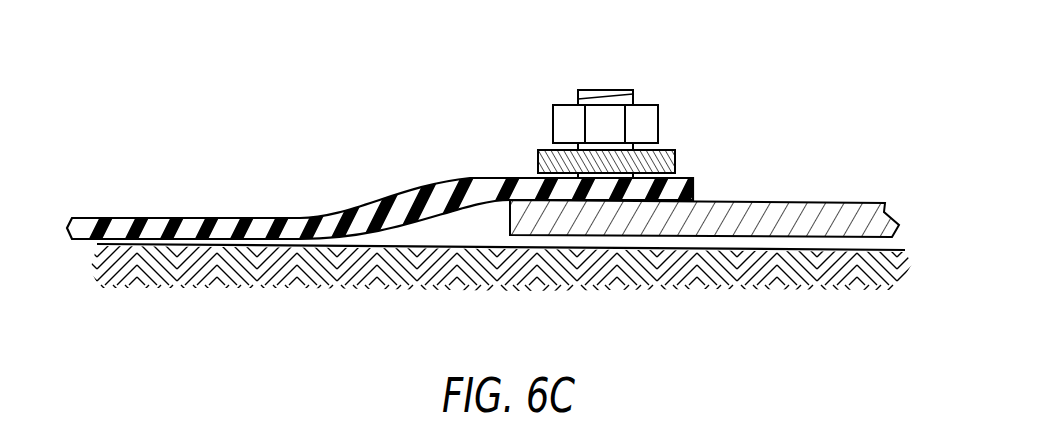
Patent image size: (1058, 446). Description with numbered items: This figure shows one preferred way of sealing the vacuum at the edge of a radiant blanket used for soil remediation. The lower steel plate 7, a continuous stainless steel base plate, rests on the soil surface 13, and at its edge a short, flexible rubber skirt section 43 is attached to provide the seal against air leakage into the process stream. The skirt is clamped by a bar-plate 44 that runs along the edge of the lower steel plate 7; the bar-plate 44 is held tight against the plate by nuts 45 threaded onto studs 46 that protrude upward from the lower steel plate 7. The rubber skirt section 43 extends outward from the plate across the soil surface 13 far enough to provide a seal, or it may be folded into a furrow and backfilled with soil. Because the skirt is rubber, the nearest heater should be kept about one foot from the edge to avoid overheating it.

The lower steel plate 7 is at (767, 202).
The soil surface 13 is at (410, 245).
The flexible rubber skirt section 43 is at (167, 217).
The bar-plate 44 is at (538, 163).
The nuts 45 is at (553, 120).
The studs 46 is at (617, 90).